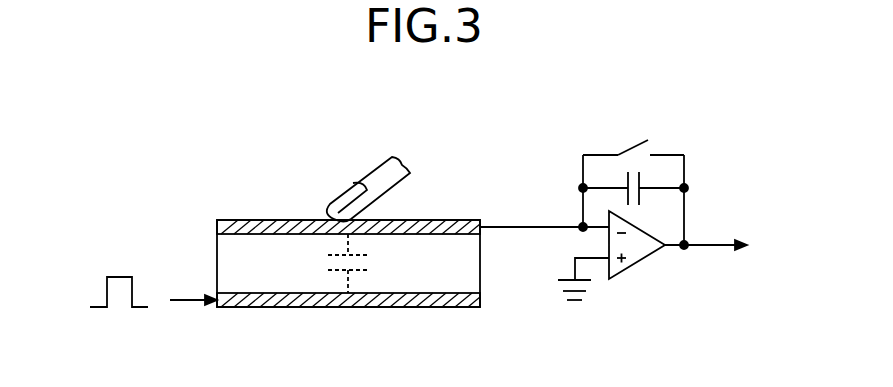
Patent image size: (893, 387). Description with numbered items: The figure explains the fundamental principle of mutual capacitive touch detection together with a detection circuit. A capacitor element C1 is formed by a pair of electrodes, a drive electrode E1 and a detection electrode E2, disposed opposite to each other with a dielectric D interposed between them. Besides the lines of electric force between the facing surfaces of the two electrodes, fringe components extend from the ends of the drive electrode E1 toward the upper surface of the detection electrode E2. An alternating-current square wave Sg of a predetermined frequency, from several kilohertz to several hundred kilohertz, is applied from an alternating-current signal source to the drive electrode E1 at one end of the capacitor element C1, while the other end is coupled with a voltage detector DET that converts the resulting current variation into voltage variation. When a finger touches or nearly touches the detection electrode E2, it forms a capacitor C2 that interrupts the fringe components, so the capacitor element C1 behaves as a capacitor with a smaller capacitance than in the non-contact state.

The alternating-current square wave Sg is at (114, 275).
The dielectric D is at (470, 280).
The detection electrode E2 is at (447, 220).
The drive electrode E1 is at (420, 308).
The capacitor element C1 is at (375, 263).
The capacitor C2 is at (368, 179).
The voltage detector DET is at (617, 135).